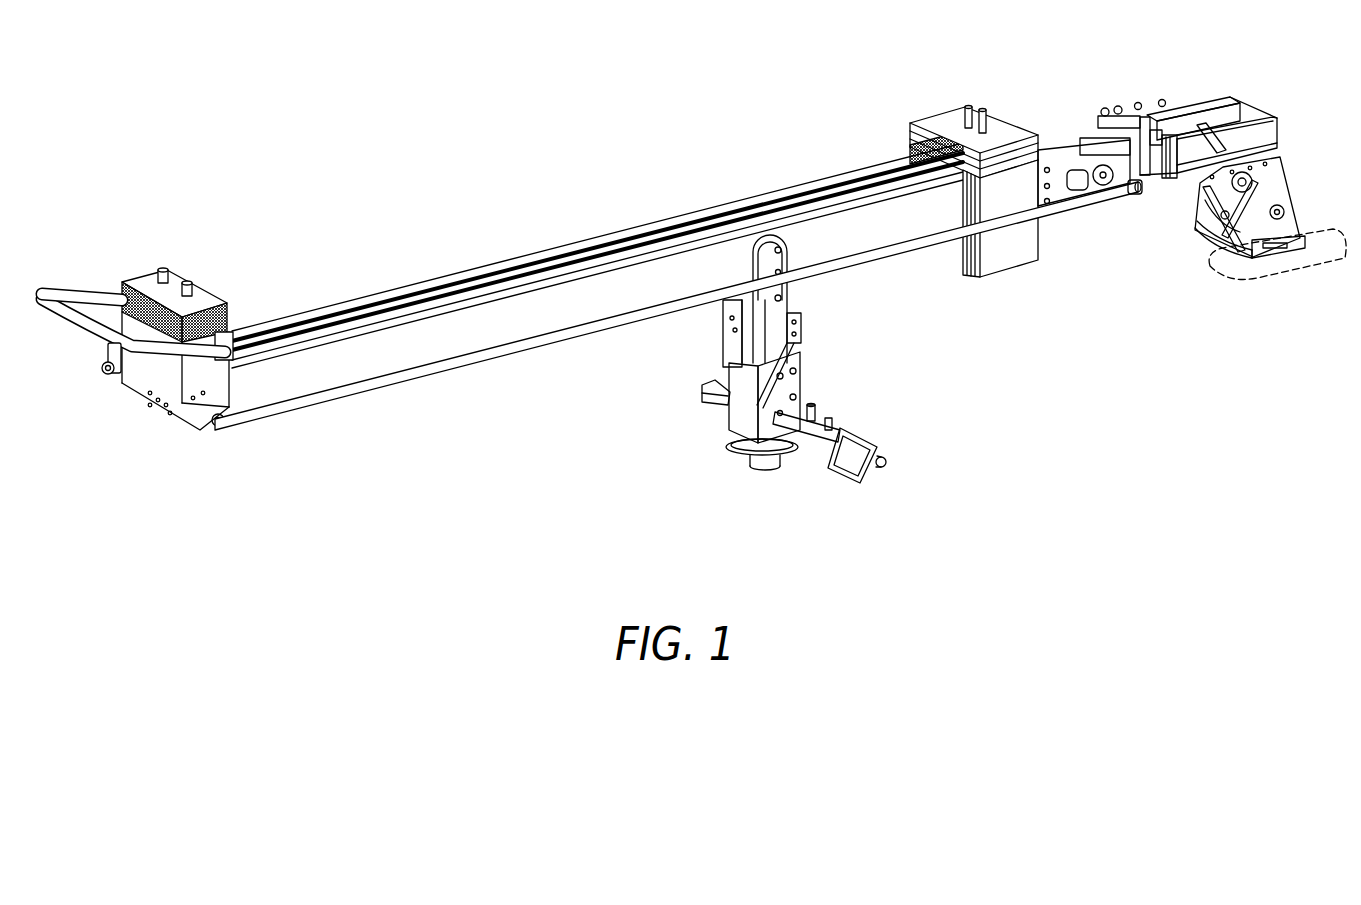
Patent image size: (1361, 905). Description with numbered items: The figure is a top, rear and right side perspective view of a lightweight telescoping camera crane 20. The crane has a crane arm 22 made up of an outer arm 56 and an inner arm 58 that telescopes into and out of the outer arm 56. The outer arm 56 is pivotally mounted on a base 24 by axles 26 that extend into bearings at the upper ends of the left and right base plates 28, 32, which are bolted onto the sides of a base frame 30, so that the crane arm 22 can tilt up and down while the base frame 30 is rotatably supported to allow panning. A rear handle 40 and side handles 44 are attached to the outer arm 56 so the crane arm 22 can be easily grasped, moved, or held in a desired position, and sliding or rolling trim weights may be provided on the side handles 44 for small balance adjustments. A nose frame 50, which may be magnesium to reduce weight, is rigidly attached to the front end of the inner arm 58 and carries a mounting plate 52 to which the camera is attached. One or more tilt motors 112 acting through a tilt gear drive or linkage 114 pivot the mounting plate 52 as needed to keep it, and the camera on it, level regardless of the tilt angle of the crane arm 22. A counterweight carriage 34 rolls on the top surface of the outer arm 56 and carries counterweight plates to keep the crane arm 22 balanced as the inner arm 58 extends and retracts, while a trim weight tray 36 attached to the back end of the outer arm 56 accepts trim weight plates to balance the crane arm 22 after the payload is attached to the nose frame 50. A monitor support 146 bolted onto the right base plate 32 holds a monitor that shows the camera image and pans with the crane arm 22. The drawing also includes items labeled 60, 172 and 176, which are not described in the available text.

The camera crane 20 is at (597, 255).
The crane arm 22 is at (660, 221).
The base 24 is at (793, 343).
The axles 26 is at (772, 233).
The left base plate 28 is at (733, 448).
The base frame 30 is at (755, 393).
The right base plate 32 is at (723, 333).
The counterweight carriage 34 is at (1006, 116).
The trim weight tray 36 is at (168, 331).
The rear handle 40 is at (78, 292).
The side handles 44 is at (678, 306).
The nose frame 50 is at (1222, 197).
The mounting plate 52 is at (1258, 262).
The outer arm 56 is at (407, 348).
The inner arm 58 is at (1138, 188).
The sensor 60 is at (1106, 112).
The tilt motors 112 is at (1194, 232).
The tilt gear drive or linkage 114 is at (1257, 178).
The monitor support 146 is at (850, 467).
The workpiece 172 is at (1266, 283).
The camera housing 176 is at (845, 463).